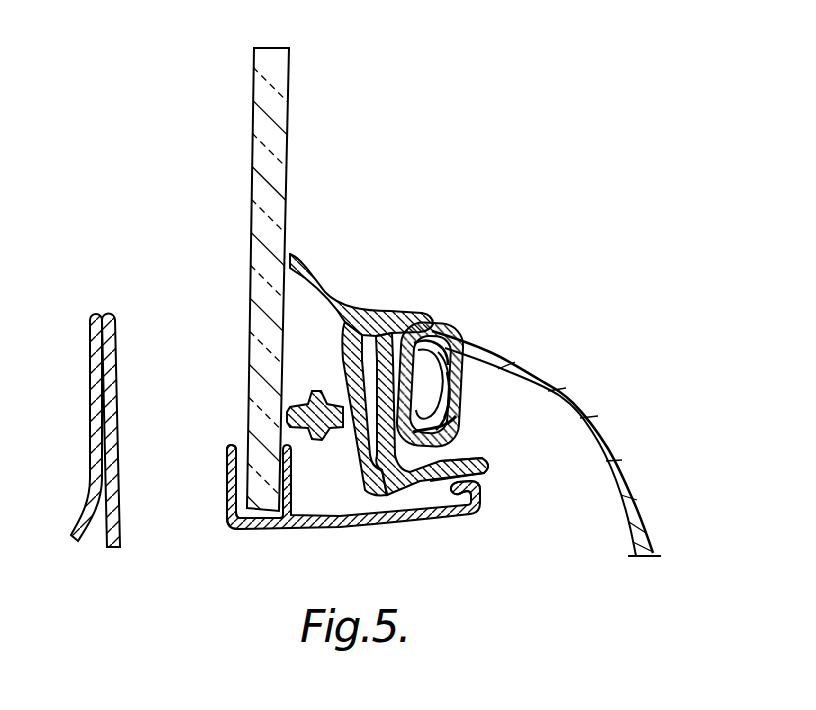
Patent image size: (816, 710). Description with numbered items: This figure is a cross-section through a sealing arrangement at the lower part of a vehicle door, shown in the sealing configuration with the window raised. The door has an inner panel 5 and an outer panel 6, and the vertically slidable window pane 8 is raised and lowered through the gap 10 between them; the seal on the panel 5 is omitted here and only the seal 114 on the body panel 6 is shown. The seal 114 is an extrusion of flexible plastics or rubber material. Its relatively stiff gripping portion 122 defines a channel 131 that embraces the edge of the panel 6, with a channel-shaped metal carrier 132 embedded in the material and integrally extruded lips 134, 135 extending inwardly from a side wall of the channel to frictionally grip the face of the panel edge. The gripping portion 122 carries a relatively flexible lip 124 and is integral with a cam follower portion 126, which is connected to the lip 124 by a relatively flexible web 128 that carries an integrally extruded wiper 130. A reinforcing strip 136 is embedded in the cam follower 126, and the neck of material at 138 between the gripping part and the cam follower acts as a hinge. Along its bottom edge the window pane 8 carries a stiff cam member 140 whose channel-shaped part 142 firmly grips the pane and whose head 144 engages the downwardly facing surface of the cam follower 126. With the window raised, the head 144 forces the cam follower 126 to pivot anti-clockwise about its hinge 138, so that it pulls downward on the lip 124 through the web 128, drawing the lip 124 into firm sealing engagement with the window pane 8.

The inner panel 5 is at (90, 396).
The outer panel 6 is at (557, 564).
The window pane 8 is at (275, 137).
The gap 10 is at (192, 429).
The seal 114 is at (407, 299).
The gripping portion 122 is at (462, 432).
The lip 124 is at (312, 278).
The cam follower portion 126 is at (480, 472).
The web 128 is at (353, 467).
The wiper 130 is at (292, 400).
The channel 131 is at (444, 360).
The channel-shaped metal core or carrier 132 is at (445, 395).
The lip 134 is at (432, 318).
The lip 135 is at (450, 393).
The reinforcing strip 136 is at (418, 432).
The hinge portion 138 is at (443, 450).
The cam member 140 is at (365, 543).
The channel-shaped part 142 is at (228, 478).
The head 144 is at (478, 507).